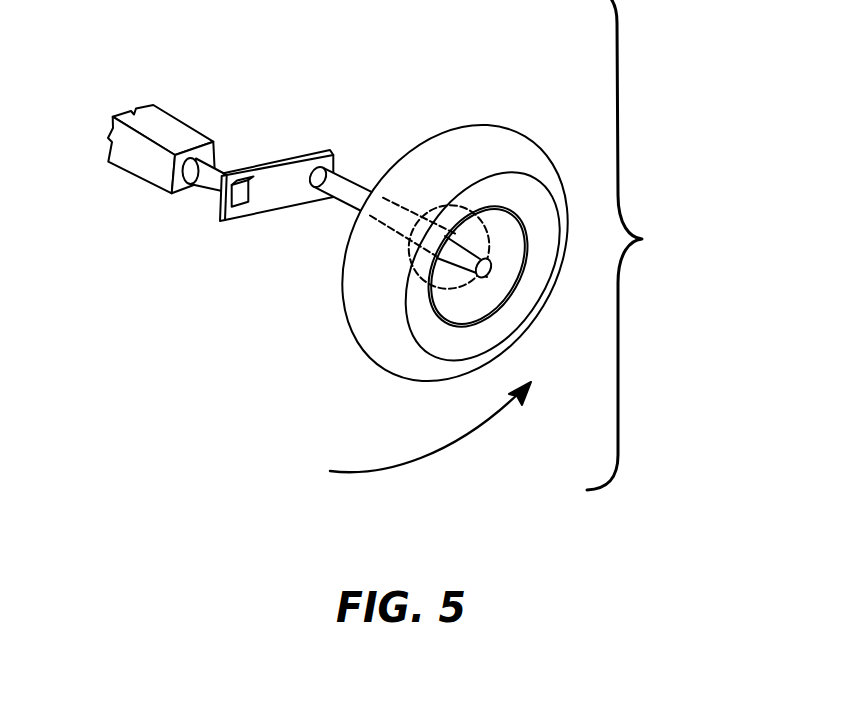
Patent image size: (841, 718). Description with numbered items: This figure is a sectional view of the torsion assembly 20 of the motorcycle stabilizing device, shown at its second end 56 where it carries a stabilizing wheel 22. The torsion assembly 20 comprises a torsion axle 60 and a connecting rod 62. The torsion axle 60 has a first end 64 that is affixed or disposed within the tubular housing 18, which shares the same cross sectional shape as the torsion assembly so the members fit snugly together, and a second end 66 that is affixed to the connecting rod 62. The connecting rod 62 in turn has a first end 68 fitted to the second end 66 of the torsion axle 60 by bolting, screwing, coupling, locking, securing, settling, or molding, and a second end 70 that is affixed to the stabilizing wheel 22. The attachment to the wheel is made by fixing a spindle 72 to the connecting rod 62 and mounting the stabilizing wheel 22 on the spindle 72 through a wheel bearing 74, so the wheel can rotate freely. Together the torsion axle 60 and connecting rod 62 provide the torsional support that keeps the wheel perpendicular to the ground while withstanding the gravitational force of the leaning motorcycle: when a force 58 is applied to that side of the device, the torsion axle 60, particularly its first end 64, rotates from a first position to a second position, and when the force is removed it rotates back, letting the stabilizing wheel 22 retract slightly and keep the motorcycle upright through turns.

The tubular housing 18 is at (128, 174).
The torsion assembly 20 is at (636, 245).
The stabilizing wheel 22 is at (519, 122).
The second end of the torsion assembly 56 is at (332, 151).
The force 58 is at (430, 440).
The torsion axle 60 is at (203, 195).
The connecting rod 62 is at (253, 218).
The first end of the torsion axle 64 is at (195, 157).
The second end of the torsion axle 66 is at (254, 186).
The first end of the connecting rod 68 is at (222, 217).
The second end of the connecting rod 70 is at (337, 162).
The spindle 72 is at (348, 206).
The wheel bearing 74 is at (448, 210).